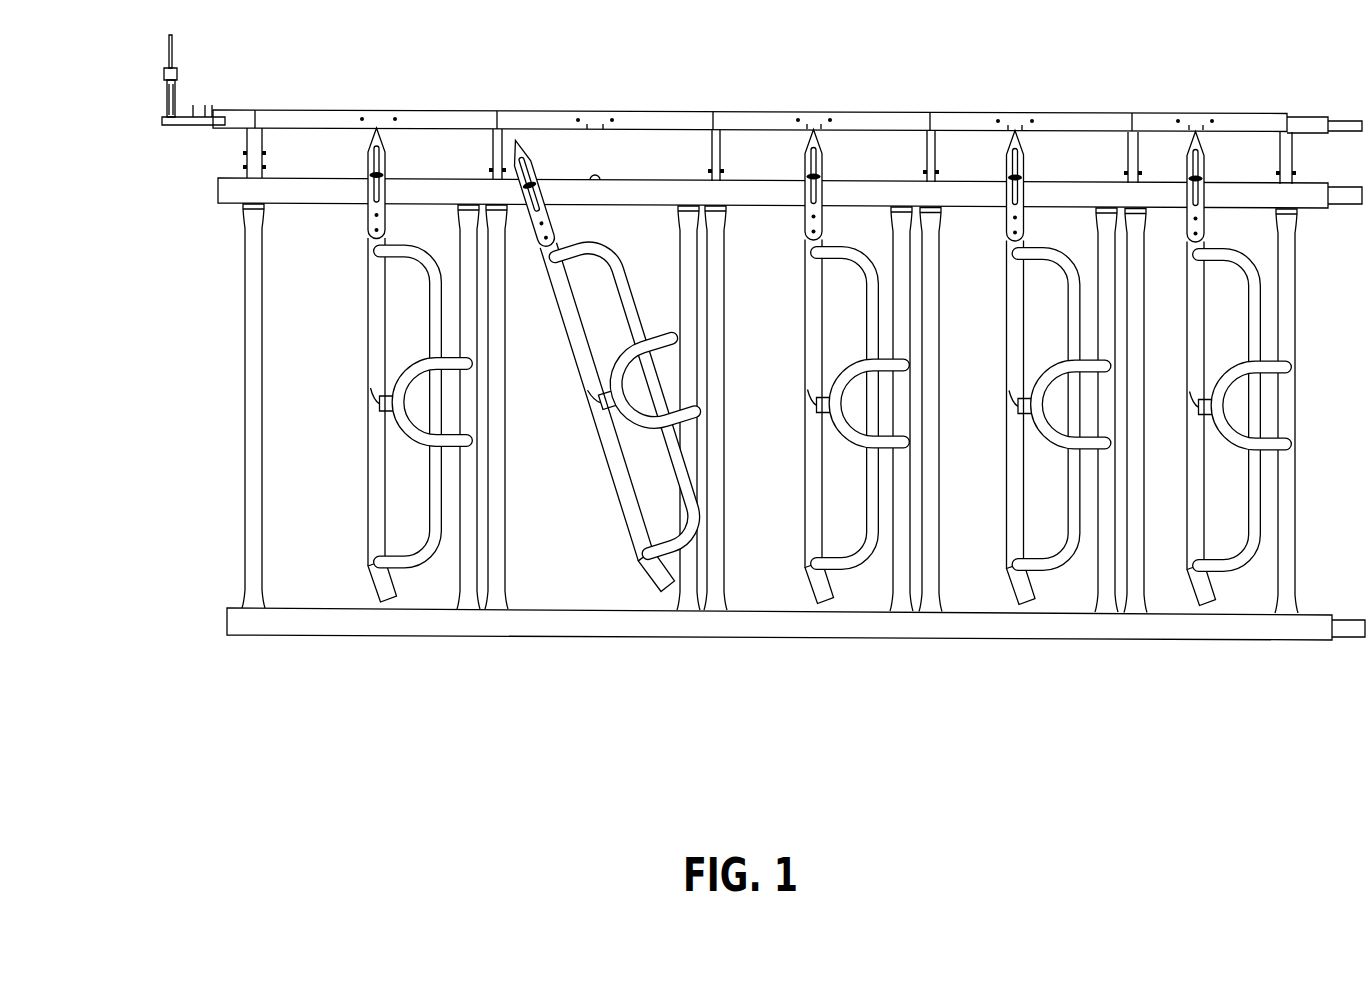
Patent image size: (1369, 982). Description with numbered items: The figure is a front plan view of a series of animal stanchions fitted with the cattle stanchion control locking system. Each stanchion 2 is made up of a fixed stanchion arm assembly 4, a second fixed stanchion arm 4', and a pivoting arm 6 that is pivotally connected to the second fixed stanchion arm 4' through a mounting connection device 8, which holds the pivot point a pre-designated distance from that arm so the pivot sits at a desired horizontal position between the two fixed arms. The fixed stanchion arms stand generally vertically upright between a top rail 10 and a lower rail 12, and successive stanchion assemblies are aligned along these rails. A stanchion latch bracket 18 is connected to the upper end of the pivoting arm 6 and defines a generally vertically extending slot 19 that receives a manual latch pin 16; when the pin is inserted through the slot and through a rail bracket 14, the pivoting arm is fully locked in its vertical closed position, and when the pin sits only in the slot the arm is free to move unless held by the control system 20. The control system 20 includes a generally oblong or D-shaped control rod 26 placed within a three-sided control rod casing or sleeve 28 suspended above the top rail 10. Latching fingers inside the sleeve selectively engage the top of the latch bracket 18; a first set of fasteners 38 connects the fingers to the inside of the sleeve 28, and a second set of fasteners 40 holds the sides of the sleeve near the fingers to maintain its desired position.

The stanchion 2 is at (236, 346).
The fixed stanchion arm assembly 4 is at (232, 406).
The second fixed stanchion arm 4' is at (464, 407).
The pivoting arm 6 is at (332, 333).
The mounting connection device 8 is at (332, 370).
The top rail 10 is at (240, 182).
The lower rail 12 is at (270, 628).
The rail bracket 14 is at (594, 177).
The manual latch pin 16 is at (354, 188).
The stanchion latch bracket 18 is at (347, 160).
The slot 19 is at (357, 107).
The control system 20 is at (155, 118).
The control rod 26 is at (1341, 123).
The control rod casing or sleeve 28 is at (662, 118).
The first set of fasteners 38 is at (398, 112).
The second set of fasteners 40 is at (366, 113).